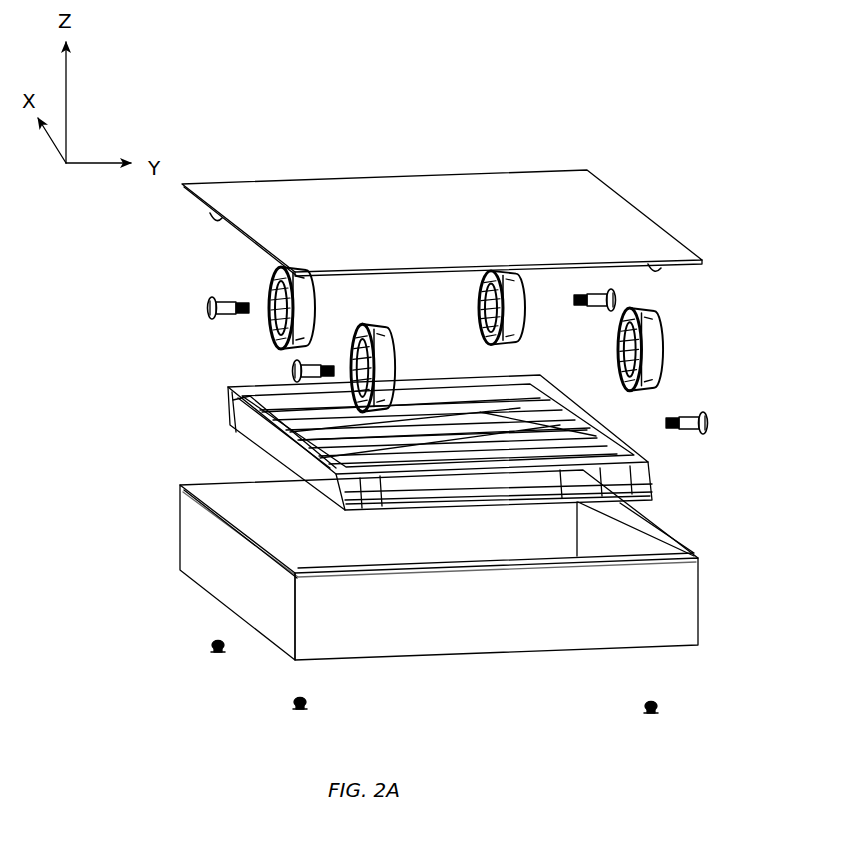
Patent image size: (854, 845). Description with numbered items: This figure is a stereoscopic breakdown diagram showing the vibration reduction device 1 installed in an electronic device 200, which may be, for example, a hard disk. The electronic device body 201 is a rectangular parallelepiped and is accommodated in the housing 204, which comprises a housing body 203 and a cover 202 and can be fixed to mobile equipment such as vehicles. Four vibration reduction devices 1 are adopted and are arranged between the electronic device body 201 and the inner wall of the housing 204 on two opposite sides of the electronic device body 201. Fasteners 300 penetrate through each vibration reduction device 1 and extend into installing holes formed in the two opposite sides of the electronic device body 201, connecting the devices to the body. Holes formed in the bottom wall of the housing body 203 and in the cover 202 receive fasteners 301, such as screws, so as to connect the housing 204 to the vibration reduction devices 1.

The electronic device 200 is at (133, 273).
The electronic device body 201 is at (232, 390).
The cover 202 is at (442, 223).
The housing body 203 is at (439, 565).
The housing 204 is at (762, 255).
The vibration reduction device 1 is at (320, 307).
The fasteners 300 is at (292, 370).
The fasteners 301 is at (290, 700).